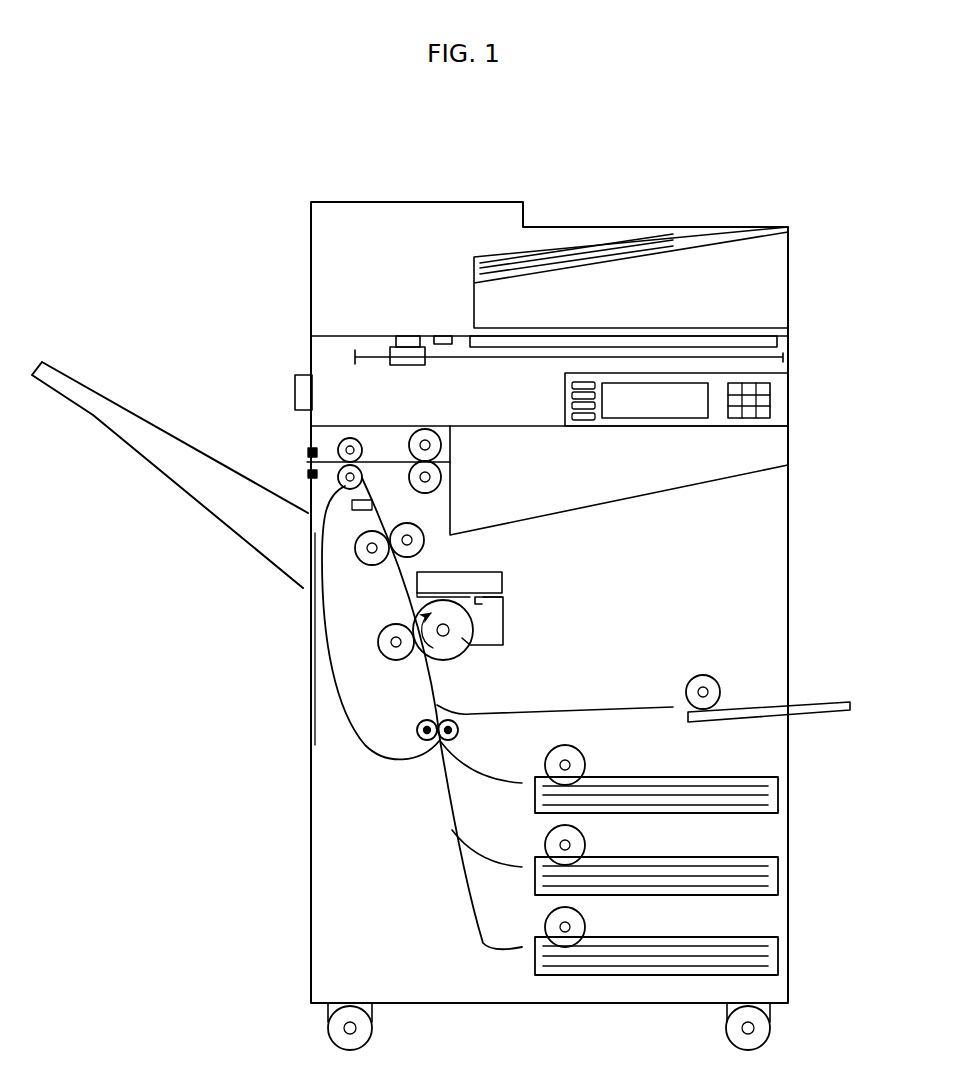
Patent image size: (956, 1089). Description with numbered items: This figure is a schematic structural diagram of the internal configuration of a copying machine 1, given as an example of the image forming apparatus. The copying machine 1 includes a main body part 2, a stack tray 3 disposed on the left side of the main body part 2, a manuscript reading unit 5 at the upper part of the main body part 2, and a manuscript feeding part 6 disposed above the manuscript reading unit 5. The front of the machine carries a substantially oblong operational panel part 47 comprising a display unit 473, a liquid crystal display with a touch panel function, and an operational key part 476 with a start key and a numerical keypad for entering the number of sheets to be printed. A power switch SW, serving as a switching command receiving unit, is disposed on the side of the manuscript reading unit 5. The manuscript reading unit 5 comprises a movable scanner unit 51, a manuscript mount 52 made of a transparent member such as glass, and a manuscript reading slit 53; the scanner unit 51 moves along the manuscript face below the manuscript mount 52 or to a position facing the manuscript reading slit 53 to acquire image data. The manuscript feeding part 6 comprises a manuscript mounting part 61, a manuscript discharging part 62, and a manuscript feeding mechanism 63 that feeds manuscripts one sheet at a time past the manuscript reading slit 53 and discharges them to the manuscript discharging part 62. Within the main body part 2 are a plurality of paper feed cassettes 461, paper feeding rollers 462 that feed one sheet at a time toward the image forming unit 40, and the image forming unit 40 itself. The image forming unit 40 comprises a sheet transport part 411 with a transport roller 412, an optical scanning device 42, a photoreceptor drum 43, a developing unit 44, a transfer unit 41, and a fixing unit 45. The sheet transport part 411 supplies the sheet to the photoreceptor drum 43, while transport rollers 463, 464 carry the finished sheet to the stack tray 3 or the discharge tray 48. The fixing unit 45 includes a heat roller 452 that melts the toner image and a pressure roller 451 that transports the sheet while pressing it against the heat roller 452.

The copying machine 1 is at (475, 609).
The main body part 2 is at (762, 617).
The stack tray 3 is at (188, 503).
The manuscript reading unit 5 is at (526, 357).
The manuscript feeding part 6 is at (631, 223).
The image forming unit 40 is at (366, 624).
The transfer unit 41 is at (387, 657).
The optical scanning device 42 is at (502, 582).
The photoreceptor drum 43 is at (465, 650).
The developing unit 44 is at (503, 623).
The fixing unit 45 is at (365, 600).
The operational panel part 47 is at (680, 425).
The discharge tray 48 is at (617, 496).
The scanner unit 51 is at (407, 368).
The manuscript mount 52 is at (779, 344).
The manuscript reading slit 53 is at (403, 336).
The manuscript mounting part 61 is at (698, 237).
The manuscript discharging part 62 is at (717, 327).
The manuscript feeding mechanism 63 is at (366, 283).
The sheet transport part 411 is at (406, 734).
The transport roller 412 is at (420, 736).
The pressure roller 451 is at (353, 555).
The heat roller 452 is at (425, 540).
The paper feed cassettes 461 is at (773, 802).
The paper feeding roller 462 is at (584, 766).
The transport roller 463 is at (442, 443).
The transport roller 464 is at (338, 443).
The display unit 473 is at (656, 406).
The operational key part 476 is at (770, 400).
The power switch SW is at (295, 394).